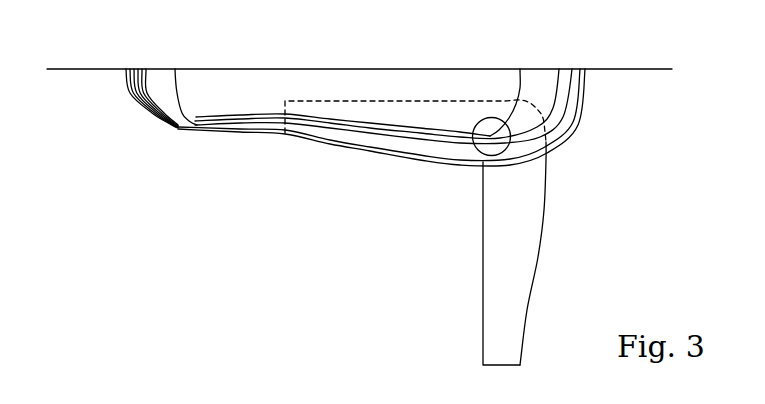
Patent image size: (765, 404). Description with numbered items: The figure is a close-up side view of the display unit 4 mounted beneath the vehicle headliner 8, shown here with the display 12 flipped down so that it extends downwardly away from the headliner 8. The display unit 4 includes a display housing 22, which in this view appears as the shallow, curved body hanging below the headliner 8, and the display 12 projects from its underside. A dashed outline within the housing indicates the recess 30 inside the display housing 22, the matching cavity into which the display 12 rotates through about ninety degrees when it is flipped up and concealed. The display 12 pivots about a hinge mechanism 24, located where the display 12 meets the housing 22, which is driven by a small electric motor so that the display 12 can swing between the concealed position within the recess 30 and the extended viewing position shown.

The headliner 8 is at (81, 69).
The display unit 4 is at (170, 129).
The recess 30 is at (365, 102).
The hinge mechanism 24 is at (478, 148).
The display housing 22 is at (577, 118).
The display 12 is at (544, 258).